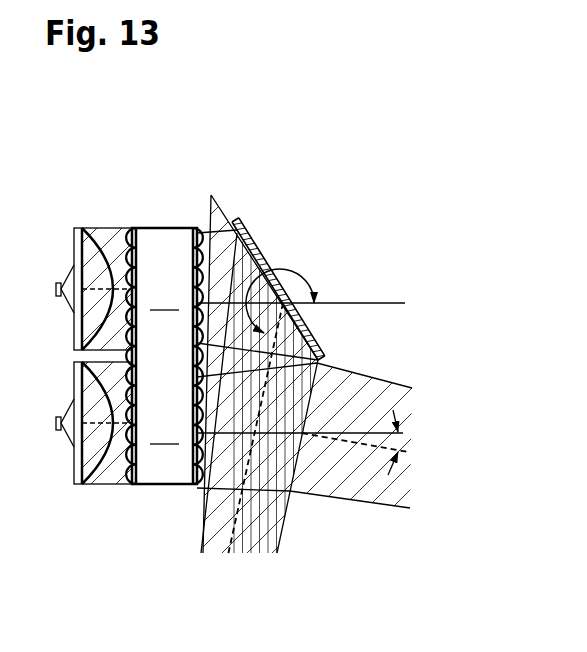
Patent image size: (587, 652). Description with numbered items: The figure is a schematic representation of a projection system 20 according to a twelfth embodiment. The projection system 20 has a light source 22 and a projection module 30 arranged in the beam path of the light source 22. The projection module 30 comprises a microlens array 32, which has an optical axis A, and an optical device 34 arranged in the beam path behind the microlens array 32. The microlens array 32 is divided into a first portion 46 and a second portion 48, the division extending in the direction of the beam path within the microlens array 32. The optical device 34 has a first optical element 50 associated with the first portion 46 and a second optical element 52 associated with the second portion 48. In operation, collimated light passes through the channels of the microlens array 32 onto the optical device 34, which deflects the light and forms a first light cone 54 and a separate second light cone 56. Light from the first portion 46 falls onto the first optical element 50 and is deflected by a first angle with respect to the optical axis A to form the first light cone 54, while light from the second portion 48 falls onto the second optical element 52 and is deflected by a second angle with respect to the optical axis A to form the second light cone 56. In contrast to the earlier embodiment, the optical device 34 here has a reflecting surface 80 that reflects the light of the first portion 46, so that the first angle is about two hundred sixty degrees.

The projection system 20 is at (293, 326).
The light source 22 is at (77, 217).
The microlens array 32 is at (164, 295).
The projection module 30 is at (293, 326).
The optical device 34 is at (223, 192).
The first optical element 50 is at (275, 252).
The reflecting surface 80 is at (258, 250).
The first portion 46 is at (164, 296).
The second portion 48 is at (164, 429).
The second optical element 52 is at (267, 462).
The first light cone 54 is at (210, 523).
The second light cone 56 is at (345, 483).
The optical axis A is at (394, 302).